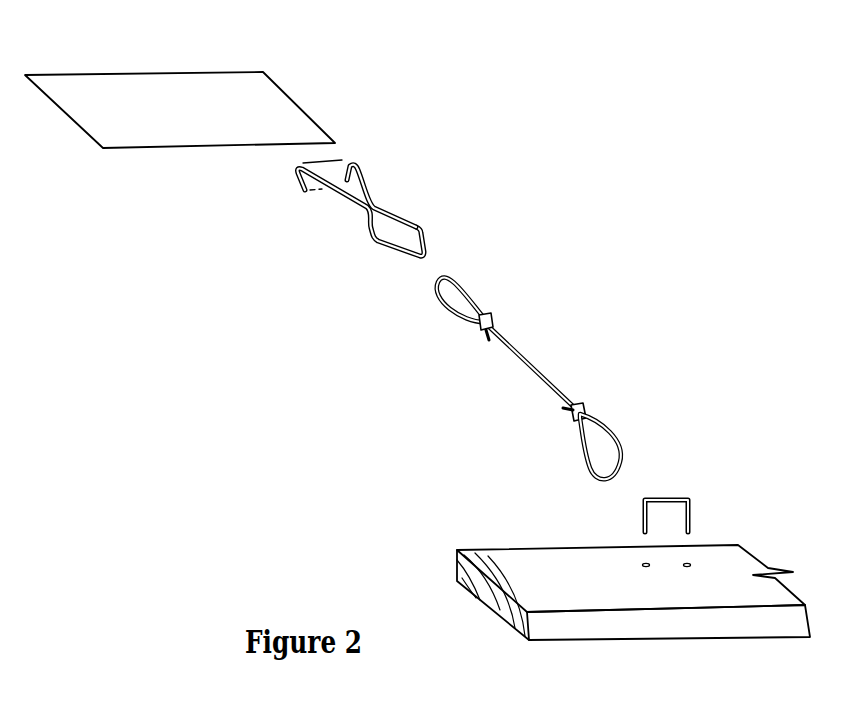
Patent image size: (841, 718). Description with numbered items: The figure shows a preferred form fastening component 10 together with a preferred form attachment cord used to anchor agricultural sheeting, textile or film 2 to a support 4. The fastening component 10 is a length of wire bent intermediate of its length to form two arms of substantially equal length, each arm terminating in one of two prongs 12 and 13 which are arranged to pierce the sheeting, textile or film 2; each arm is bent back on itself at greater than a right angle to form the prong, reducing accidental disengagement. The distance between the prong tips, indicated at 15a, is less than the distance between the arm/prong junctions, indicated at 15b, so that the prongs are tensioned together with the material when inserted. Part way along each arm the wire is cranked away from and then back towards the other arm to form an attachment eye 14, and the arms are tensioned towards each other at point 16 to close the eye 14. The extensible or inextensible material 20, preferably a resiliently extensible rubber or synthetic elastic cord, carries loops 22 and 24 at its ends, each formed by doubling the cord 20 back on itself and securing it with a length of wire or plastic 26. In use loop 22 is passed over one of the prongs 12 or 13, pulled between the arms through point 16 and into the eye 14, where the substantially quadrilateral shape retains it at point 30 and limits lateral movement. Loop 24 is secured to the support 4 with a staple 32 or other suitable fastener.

The sheeting, textile or film 2 is at (268, 90).
The support 4 is at (500, 552).
The fastening component 10 is at (443, 150).
The prong 12 is at (298, 183).
The prong 13 is at (367, 180).
The eye 14 is at (397, 232).
The distance between prong tips 15a is at (317, 200).
The distance between arm/prong junctions 15b is at (332, 159).
The point 16 is at (372, 207).
The extensible or inextensible material 20 is at (547, 373).
The loop 22 is at (470, 288).
The loop 24 is at (619, 443).
The length of wire or plastic 26 is at (491, 316).
The point 30 is at (420, 260).
The staple 32 is at (683, 500).